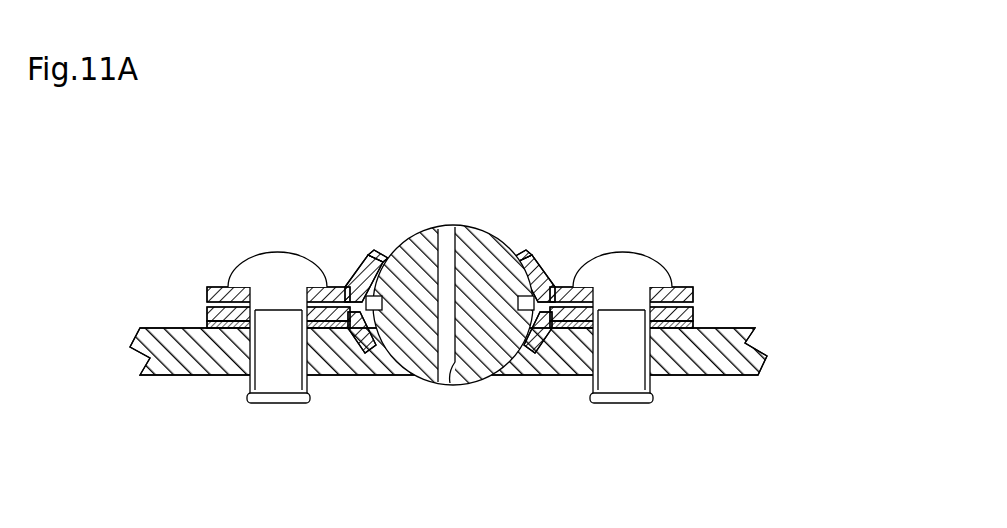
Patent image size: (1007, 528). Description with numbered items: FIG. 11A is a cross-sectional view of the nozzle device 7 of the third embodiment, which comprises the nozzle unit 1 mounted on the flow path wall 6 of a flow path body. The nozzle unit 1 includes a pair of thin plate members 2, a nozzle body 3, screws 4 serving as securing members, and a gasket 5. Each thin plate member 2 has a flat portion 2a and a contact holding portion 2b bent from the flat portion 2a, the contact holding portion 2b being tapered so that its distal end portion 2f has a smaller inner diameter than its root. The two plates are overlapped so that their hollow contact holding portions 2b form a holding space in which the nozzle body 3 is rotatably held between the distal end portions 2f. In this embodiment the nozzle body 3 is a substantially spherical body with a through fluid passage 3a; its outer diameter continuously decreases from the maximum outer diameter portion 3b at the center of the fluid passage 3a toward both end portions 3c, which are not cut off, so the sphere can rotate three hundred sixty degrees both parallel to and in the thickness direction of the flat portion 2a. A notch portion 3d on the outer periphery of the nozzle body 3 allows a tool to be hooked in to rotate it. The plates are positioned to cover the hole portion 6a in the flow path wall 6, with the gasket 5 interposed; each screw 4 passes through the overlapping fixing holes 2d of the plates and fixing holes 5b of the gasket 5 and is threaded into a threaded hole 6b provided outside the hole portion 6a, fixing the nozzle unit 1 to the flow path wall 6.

The nozzle unit 1 is at (498, 228).
The thin plate member 2 is at (207, 320).
The flat portion 2a is at (318, 330).
The contact holding portion 2b is at (362, 278).
The fixing hole 2d is at (640, 335).
The distal end portion 2f is at (374, 260).
The nozzle body 3 is at (495, 306).
The fluid passage 3a is at (456, 384).
The maximum outer diameter portion 3b is at (565, 270).
The end portion 3c is at (447, 228).
The notch portion 3d is at (392, 258).
The screw 4 is at (270, 265).
The gasket 5 is at (243, 326).
The fixing hole 5b is at (665, 376).
The flow path wall 6 is at (206, 375).
The hole portion 6a is at (364, 356).
The threaded hole 6b is at (603, 352).
The nozzle device 7 is at (834, 234).